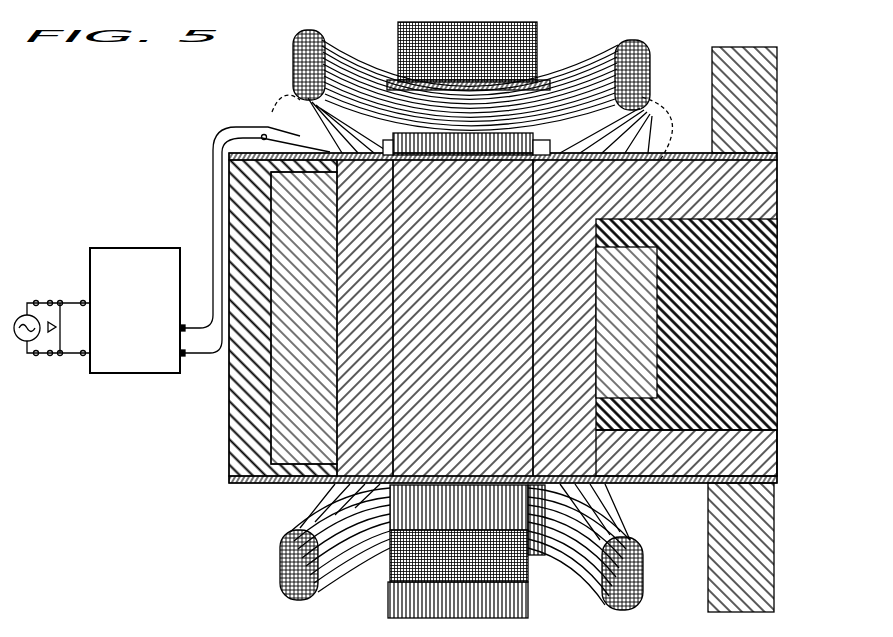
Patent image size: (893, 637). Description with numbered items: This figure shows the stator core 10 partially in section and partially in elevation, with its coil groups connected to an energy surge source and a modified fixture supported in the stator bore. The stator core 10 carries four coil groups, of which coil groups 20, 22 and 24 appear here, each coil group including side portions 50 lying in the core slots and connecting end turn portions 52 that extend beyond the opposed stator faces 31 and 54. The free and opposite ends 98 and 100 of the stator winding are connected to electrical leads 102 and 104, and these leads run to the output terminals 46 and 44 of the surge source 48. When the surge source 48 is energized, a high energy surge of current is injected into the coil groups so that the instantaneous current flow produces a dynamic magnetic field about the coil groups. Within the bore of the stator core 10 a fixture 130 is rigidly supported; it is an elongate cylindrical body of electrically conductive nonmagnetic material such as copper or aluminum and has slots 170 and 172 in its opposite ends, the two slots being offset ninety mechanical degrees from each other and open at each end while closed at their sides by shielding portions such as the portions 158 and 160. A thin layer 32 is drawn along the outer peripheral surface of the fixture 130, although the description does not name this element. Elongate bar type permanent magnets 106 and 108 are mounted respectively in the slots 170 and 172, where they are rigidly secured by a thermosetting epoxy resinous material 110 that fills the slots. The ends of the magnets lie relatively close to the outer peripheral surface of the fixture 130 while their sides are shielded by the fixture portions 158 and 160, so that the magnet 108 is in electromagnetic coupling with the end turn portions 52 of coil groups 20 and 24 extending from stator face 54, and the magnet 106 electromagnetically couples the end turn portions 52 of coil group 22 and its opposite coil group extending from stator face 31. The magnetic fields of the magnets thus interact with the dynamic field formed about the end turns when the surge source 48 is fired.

The stator core 10 is at (494, 55).
The coil group 20 is at (442, 88).
The coil group 22 is at (612, 495).
The coil group 24 is at (282, 586).
The stator face 31 is at (548, 80).
The insulating layer 32 is at (770, 160).
The output terminal 44 is at (183, 326).
The output terminal 46 is at (182, 356).
The surge source 48 is at (108, 273).
The side portion 50 is at (430, 105).
The end turn portion 52 is at (300, 70).
The stator face 54 is at (392, 570).
The free end of stator winding 98 is at (263, 134).
The opposite end of stator winding 100 is at (280, 90).
The electrical lead 102 is at (222, 147).
The electrical lead 104 is at (228, 128).
The permanent magnet 106 is at (640, 305).
The permanent magnet 108 is at (262, 485).
The thermosetting epoxy resinous material 110 is at (755, 355).
The fixture 130 is at (660, 160).
The shielding portion 158 is at (755, 200).
The shielding portion 160 is at (757, 458).
The slot 170 is at (750, 426).
The slot 172 is at (230, 440).